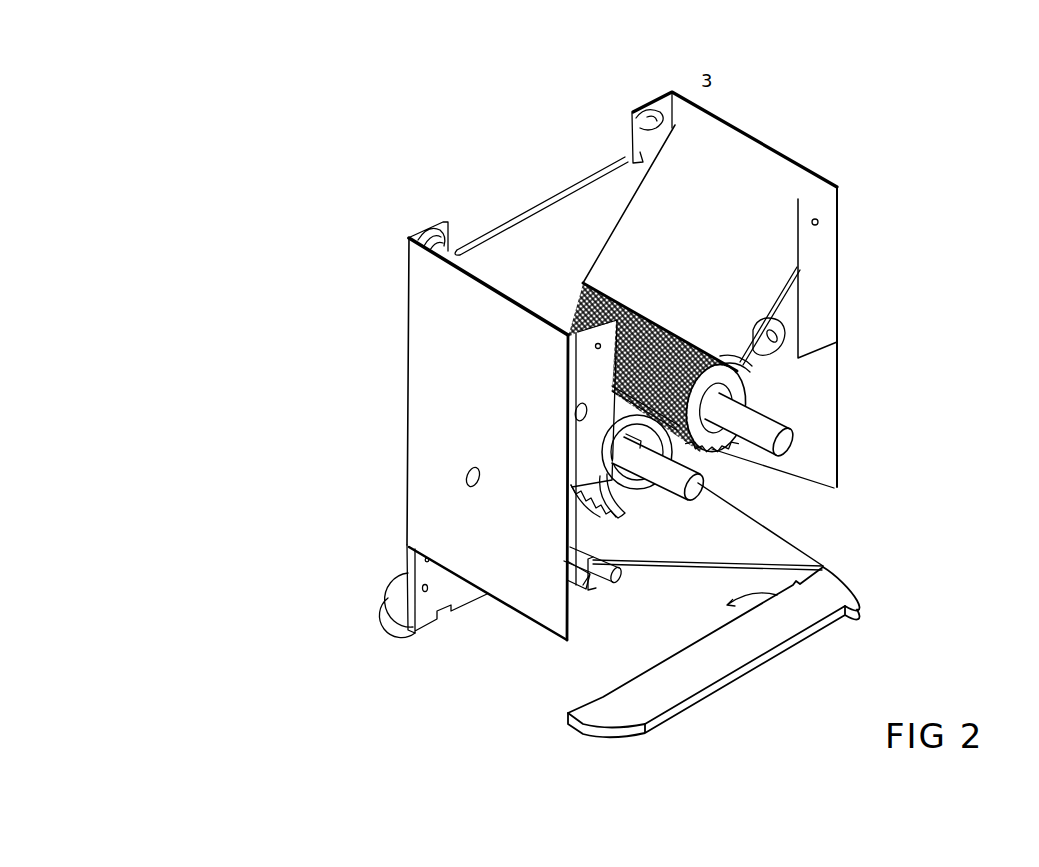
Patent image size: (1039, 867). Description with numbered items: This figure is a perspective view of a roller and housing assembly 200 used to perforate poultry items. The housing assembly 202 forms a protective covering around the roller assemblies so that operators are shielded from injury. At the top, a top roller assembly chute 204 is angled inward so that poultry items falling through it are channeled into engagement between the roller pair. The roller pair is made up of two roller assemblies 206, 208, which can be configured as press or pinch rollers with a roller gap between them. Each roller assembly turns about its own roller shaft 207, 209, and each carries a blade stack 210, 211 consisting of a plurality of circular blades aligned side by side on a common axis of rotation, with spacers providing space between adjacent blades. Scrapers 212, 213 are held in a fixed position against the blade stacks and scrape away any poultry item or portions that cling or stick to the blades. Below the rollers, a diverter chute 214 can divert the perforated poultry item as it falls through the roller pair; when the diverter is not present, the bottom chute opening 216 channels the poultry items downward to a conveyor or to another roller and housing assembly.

The roller and housing assembly 200 is at (820, 115).
The housing assembly 202 is at (430, 368).
The top roller assembly chute 204 is at (667, 207).
The roller assembly 206 is at (794, 414).
The roller shaft 207 is at (800, 442).
The roller assembly 208 is at (669, 515).
The roller shaft 209 is at (703, 490).
The blade stack 210 is at (587, 300).
The blade stack 211 is at (568, 496).
The scraper 212 is at (620, 523).
The scraper 213 is at (760, 463).
The diverter chute 214 is at (753, 545).
The bottom chute opening 216 is at (805, 592).